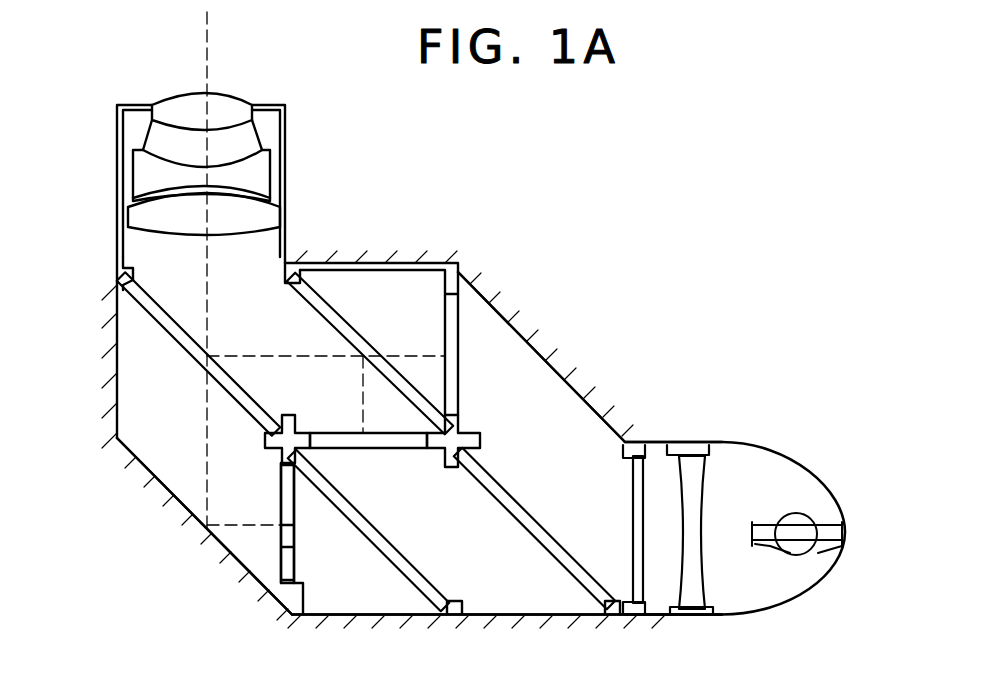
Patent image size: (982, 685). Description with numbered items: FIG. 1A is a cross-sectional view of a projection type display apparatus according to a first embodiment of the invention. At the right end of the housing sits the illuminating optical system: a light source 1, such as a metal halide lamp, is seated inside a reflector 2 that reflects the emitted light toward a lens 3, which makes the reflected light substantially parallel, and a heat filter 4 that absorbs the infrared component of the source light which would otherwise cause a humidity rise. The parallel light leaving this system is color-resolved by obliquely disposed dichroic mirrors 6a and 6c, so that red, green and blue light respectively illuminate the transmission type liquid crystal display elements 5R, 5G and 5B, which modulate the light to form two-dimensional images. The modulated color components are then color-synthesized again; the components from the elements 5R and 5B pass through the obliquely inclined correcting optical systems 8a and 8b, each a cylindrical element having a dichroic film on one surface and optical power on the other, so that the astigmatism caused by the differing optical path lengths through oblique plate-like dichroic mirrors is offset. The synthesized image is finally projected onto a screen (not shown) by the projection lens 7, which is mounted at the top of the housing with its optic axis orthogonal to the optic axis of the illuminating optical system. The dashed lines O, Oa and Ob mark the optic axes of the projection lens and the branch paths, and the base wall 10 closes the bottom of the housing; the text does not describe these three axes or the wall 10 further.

The optical axis O is at (208, 52).
The optical axis Oa is at (409, 357).
The optical axis Ob is at (200, 432).
The light source 1 is at (797, 523).
The reflector 2 is at (790, 470).
The lens 3 is at (695, 603).
The heat filter 4 is at (633, 563).
The liquid crystal display element 5R is at (460, 355).
The liquid crystal display element 5G is at (367, 448).
The liquid crystal display element 5B is at (280, 548).
The dichroic mirror 6a is at (560, 565).
The dichroic mirror 6c is at (422, 575).
The projection lens 7 is at (258, 178).
The cylindrical correcting optical system 8a is at (351, 312).
The cylindrical correcting optical system 8b is at (158, 318).
The housing base 10 is at (290, 616).